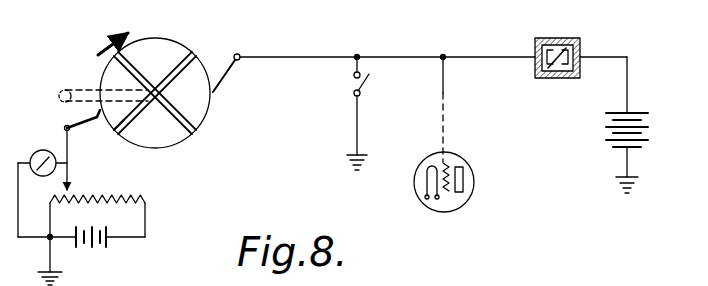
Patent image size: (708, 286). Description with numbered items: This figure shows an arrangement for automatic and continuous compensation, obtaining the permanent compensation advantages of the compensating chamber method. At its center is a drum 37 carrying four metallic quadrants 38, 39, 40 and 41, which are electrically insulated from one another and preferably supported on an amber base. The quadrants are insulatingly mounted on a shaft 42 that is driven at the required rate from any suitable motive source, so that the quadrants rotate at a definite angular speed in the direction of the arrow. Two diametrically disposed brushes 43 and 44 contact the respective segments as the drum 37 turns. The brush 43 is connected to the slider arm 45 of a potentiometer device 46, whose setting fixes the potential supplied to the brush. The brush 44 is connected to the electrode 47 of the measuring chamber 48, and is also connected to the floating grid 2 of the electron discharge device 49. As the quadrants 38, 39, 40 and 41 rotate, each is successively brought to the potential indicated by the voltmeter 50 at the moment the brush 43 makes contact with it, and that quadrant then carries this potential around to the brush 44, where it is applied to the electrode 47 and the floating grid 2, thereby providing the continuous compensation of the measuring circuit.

The floating grid 2 is at (450, 166).
The drum 37 is at (199, 128).
The metallic quadrant 38 is at (177, 143).
The metallic quadrant 39 is at (199, 63).
The metallic quadrant 40 is at (165, 48).
The metallic quadrant 41 is at (115, 119).
The shaft 42 is at (78, 89).
The brush 43 is at (88, 110).
The brush 44 is at (215, 92).
The slider arm 45 is at (73, 190).
The potentiometer device 46 is at (129, 197).
The electrode 47 is at (553, 48).
The measuring chamber 48 is at (555, 79).
The electron discharge device 49 is at (472, 205).
The voltmeter 50 is at (36, 156).